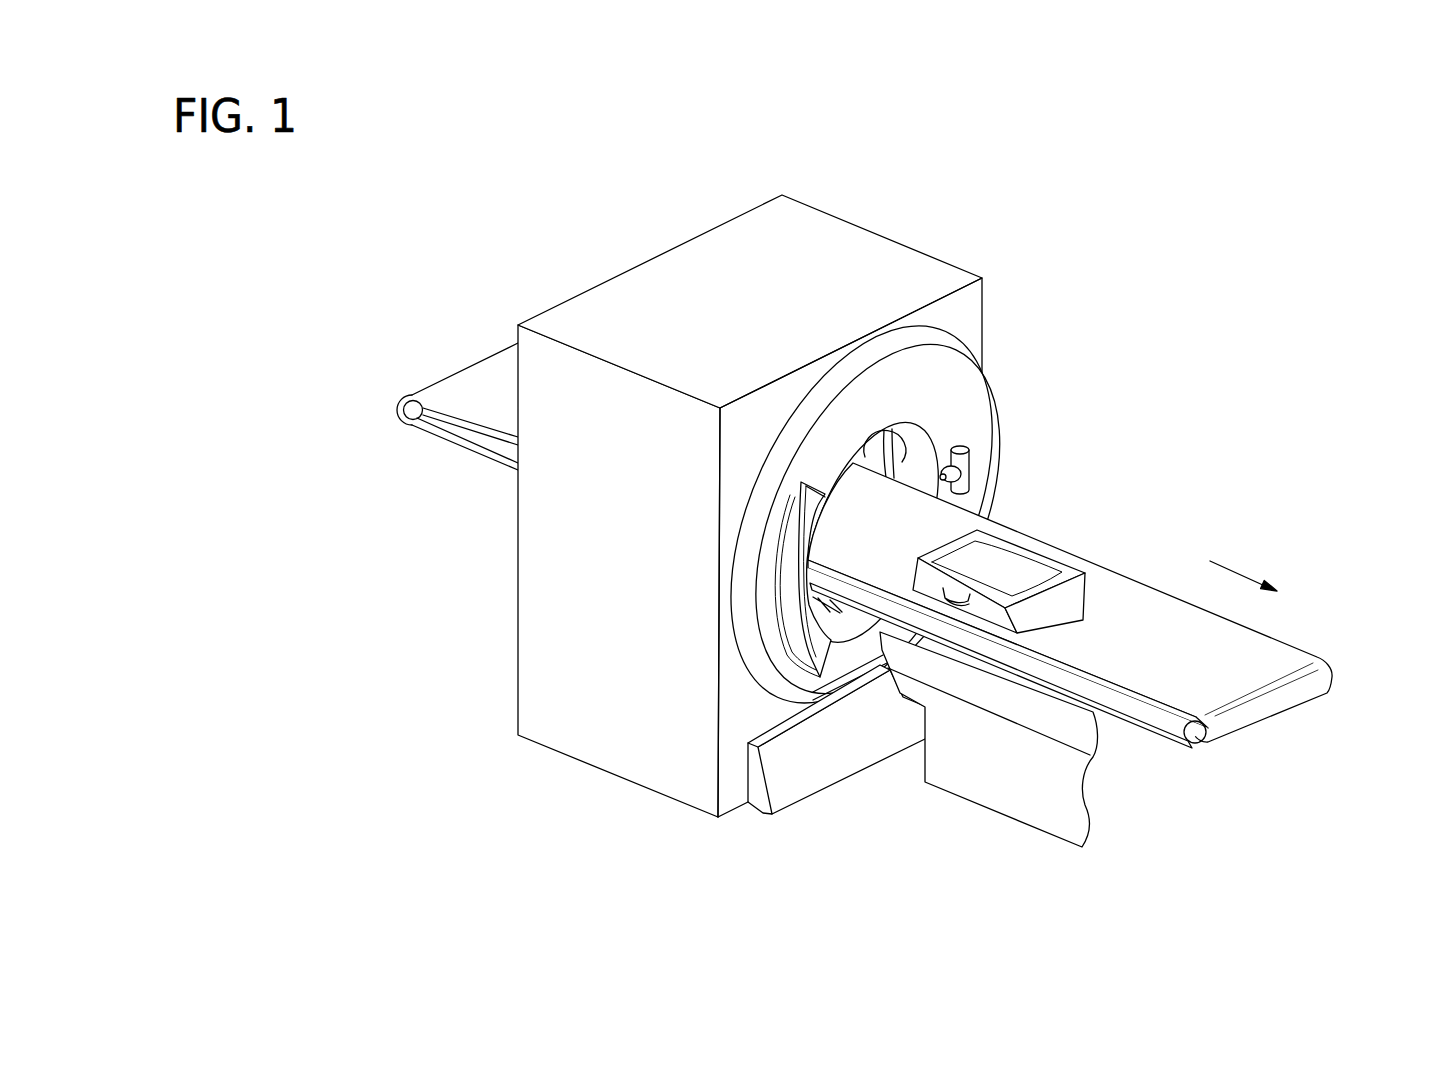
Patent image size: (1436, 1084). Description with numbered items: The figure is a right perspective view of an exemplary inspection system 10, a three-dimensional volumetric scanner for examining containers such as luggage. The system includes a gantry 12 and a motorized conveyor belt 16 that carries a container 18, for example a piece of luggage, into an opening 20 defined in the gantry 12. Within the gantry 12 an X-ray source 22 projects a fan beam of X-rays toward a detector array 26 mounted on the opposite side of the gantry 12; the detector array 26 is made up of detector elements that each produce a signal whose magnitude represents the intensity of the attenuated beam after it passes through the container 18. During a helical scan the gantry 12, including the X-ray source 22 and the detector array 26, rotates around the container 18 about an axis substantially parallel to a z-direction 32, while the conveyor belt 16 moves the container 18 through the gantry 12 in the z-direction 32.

The inspection system 10 is at (873, 522).
The gantry 12 is at (963, 390).
The motorized conveyor belt 16 is at (1062, 700).
The container 18 is at (1010, 562).
The opening 20 is at (908, 425).
The X-ray source 22 is at (963, 468).
The detector array 26 is at (787, 584).
The z-direction 32 is at (1229, 566).